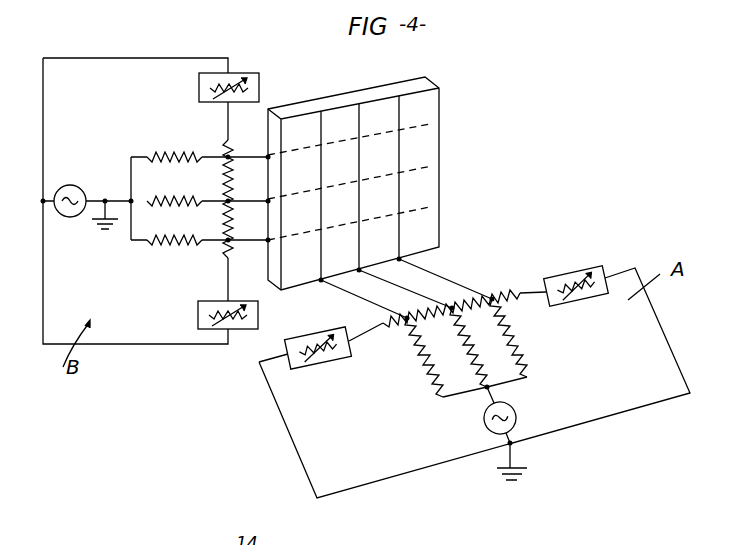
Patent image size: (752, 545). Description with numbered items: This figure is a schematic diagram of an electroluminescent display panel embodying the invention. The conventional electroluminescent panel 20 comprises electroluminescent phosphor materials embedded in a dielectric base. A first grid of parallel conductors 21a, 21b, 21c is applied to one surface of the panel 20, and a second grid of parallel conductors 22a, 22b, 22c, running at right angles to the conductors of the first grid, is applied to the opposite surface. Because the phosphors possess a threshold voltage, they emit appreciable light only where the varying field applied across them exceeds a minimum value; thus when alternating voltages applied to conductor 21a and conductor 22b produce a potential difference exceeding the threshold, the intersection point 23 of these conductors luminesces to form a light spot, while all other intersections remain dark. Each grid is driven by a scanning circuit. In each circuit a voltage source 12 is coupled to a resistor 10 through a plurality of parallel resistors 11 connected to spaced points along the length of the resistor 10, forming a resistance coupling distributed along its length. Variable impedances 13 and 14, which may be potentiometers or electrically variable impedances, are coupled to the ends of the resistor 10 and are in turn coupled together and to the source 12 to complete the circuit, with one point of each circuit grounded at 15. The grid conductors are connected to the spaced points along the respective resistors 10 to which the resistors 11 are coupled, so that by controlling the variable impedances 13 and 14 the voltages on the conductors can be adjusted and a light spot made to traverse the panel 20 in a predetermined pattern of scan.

The resistor 10 is at (241, 166).
The parallel resistors 11 is at (181, 180).
The voltage source 12 is at (68, 219).
The variable impedance 13 is at (248, 73).
The variable impedance 14 is at (198, 314).
The ground 15 is at (105, 197).
The electroluminescent panel 20 is at (326, 97).
The conductor 21a is at (329, 154).
The conductor 21b is at (362, 210).
The conductor 21c is at (400, 148).
The conductor 22a is at (415, 121).
The conductor 22b is at (424, 164).
The conductor 22c is at (335, 231).
The intersection point 23 is at (320, 189).